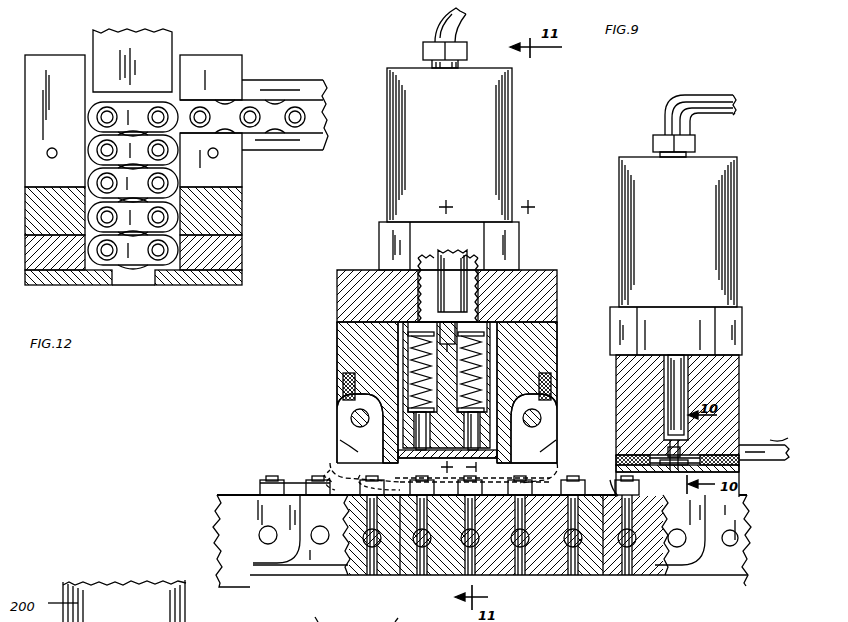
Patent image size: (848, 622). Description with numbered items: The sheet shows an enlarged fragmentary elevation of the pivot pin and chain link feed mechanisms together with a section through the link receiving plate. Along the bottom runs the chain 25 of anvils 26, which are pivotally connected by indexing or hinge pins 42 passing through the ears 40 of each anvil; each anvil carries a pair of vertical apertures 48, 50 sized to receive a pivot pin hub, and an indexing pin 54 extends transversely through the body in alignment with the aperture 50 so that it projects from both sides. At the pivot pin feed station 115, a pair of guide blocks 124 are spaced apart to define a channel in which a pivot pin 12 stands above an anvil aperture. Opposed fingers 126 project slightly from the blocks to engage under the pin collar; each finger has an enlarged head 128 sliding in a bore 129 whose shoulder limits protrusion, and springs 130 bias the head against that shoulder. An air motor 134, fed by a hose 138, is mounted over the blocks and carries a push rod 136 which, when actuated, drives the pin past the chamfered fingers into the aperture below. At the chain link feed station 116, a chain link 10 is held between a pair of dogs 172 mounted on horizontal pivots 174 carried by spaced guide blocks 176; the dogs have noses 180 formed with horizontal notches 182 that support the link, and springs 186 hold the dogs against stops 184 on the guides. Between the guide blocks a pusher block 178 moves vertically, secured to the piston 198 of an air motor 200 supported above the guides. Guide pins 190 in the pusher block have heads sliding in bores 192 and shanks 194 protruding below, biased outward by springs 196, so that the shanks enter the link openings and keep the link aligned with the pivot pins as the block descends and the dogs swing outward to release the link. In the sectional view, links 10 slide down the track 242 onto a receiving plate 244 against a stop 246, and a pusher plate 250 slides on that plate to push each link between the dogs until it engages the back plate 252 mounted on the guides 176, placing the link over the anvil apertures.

In FIG. 12, the chain link 10 is at (95, 178).
In FIG. 9, the chain link 10 is at (433, 461).
In FIG. 9, the pivot pin 12 is at (607, 485).
In FIG. 9, the chain 25 is at (252, 514).
In FIG. 9, the anvil 26 is at (318, 621).
In FIG. 9, the ears 40 is at (395, 621).
In FIG. 9, the indexing or hinge pins 42 is at (266, 538).
In FIG. 9, the aperture 48 is at (425, 575).
In FIG. 9, the aperture 50 is at (470, 572).
In FIG. 9, the indexing pin 54 is at (566, 575).
In FIG. 9, the pivot pin feed station 115 is at (617, 180).
In FIG. 9, the chain link feed station 116 is at (383, 86).
In FIG. 9, the guide blocks 124 is at (735, 410).
In FIG. 9, the fingers 126 is at (668, 470).
In FIG. 9, the enlarged head 128 is at (640, 455).
In FIG. 9, the bore 129 is at (716, 458).
In FIG. 9, the springs 130 is at (620, 442).
In FIG. 9, the air motor 134 is at (727, 198).
In FIG. 9, the push rod 136 is at (672, 362).
In FIG. 9, the hose 138 is at (715, 102).
In FIG. 12, the dogs 172 is at (225, 258).
In FIG. 9, the dogs 172 is at (558, 432).
In FIG. 9, the horizontal pivots 174 is at (352, 415).
In FIG. 12, the guide blocks 176 is at (56, 182).
In FIG. 9, the guide blocks 176 is at (340, 356).
In FIG. 9, the pusher block 178 is at (452, 301).
In FIG. 9, the noses 180 is at (480, 480).
In FIG. 9, the horizontal notch 182 is at (500, 456).
In FIG. 9, the stops 184 is at (398, 456).
In FIG. 9, the springs 186 is at (343, 383).
In FIG. 9, the guide pins 190 is at (428, 446).
In FIG. 9, the bores 192 is at (410, 381).
In FIG. 9, the shanks 194 is at (448, 446).
In FIG. 9, the springs 196 is at (406, 356).
In FIG. 9, the piston 198 is at (412, 278).
In FIG. 9, the air motor 200 is at (398, 135).
In FIG. 12, the track 242 is at (272, 87).
In FIG. 9, the track 242 is at (755, 463).
In FIG. 12, the receiving plate 244 is at (181, 70).
In FIG. 12, the stop 246 is at (42, 64).
In FIG. 12, the pusher plate 250 is at (160, 52).
In FIG. 12, the back plate 252 is at (200, 287).